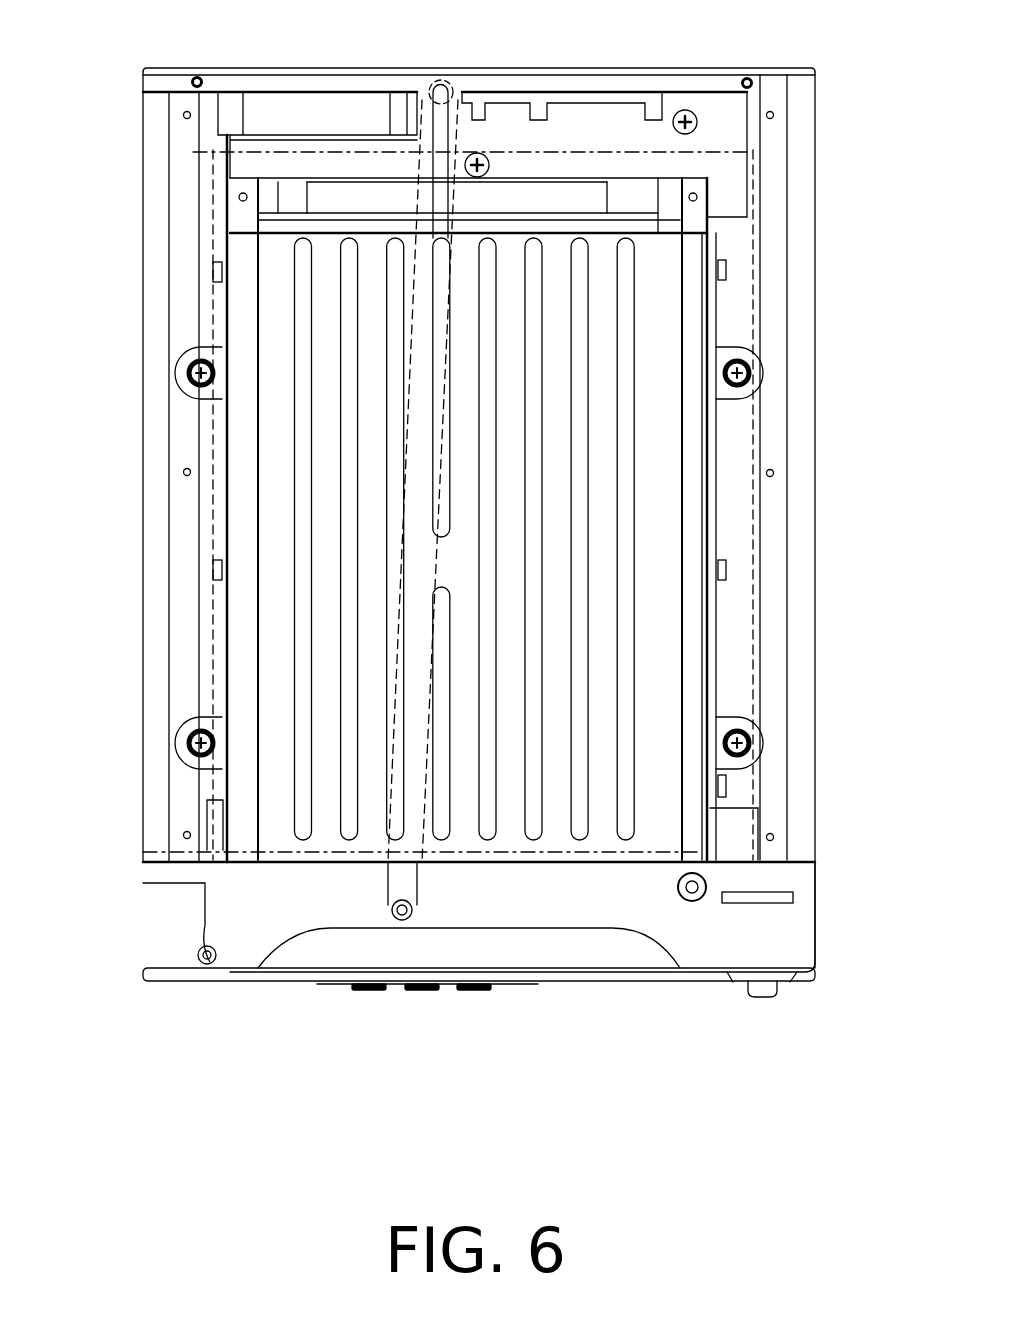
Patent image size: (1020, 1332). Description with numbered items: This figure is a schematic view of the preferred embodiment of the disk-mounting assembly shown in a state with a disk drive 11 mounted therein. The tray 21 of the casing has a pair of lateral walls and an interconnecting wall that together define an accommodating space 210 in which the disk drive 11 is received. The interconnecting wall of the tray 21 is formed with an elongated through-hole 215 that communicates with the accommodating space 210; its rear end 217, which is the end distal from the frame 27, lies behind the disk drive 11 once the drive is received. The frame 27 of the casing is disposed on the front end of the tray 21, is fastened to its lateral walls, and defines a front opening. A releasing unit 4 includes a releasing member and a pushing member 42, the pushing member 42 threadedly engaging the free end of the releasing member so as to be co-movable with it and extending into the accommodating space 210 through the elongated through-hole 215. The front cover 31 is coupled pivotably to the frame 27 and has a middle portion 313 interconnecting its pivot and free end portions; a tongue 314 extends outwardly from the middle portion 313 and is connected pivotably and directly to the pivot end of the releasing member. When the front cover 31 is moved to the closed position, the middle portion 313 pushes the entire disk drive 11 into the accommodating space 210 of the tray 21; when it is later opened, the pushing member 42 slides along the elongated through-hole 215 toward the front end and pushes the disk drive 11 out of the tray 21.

The disk drive 11 is at (250, 163).
The tray 21 is at (200, 348).
The accommodating space 210 is at (278, 530).
The elongated through-hole 215 is at (438, 352).
The rear end of the elongated through-hole 217 is at (440, 95).
The pushing member 42 is at (442, 86).
The releasing unit 4 is at (432, 883).
The frame 27 is at (795, 932).
The front cover 31 is at (232, 980).
The middle portion 313 is at (578, 950).
The tongue 314 is at (420, 920).